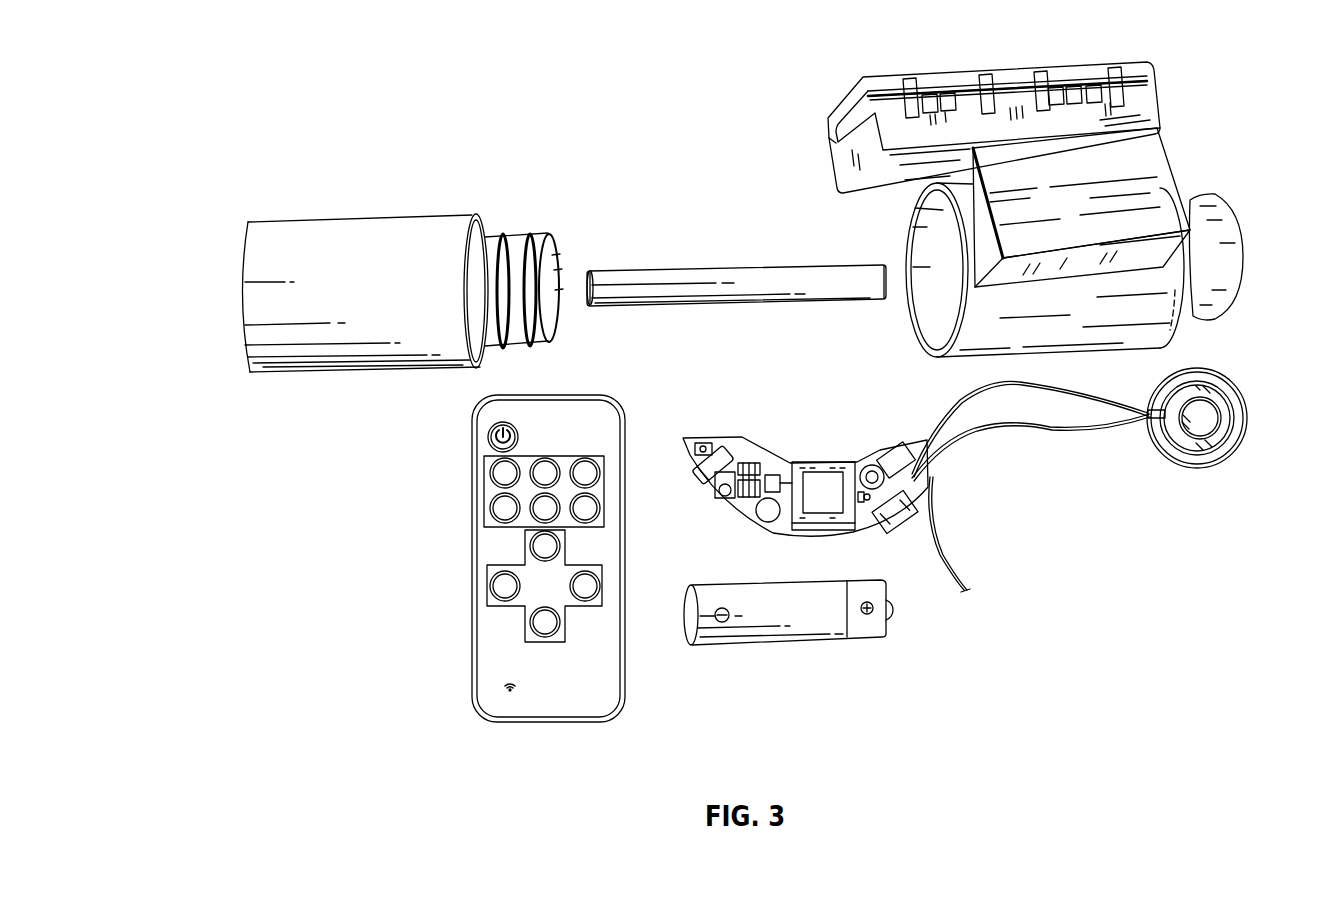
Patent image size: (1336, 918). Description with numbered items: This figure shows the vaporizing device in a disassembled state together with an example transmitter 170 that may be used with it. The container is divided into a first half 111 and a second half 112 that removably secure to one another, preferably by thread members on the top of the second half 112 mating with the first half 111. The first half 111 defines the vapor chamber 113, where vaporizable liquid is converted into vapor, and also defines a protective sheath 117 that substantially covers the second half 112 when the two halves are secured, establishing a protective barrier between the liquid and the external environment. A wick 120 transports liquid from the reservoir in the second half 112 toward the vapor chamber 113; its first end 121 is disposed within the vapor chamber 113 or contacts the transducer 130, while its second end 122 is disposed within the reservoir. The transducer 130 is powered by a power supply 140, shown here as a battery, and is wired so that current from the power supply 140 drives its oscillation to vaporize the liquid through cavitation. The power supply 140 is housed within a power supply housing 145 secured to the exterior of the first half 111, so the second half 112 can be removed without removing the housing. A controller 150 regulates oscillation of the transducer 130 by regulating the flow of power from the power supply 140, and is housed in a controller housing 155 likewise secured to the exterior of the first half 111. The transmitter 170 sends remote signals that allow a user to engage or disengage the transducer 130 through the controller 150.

The first half 111 is at (1118, 285).
The second half 112 is at (239, 293).
The vapor chamber 113 is at (1212, 295).
The protective sheath 117 is at (1063, 323).
The wick 120 is at (745, 276).
The first end 121 is at (885, 283).
The second end 122 is at (583, 292).
The transducer 130 is at (1177, 466).
The power supply 140 is at (755, 593).
The power supply housing 145 is at (1007, 75).
The controller 150 is at (773, 460).
The controller housing 155 is at (1150, 157).
The transmitter 170 is at (610, 662).